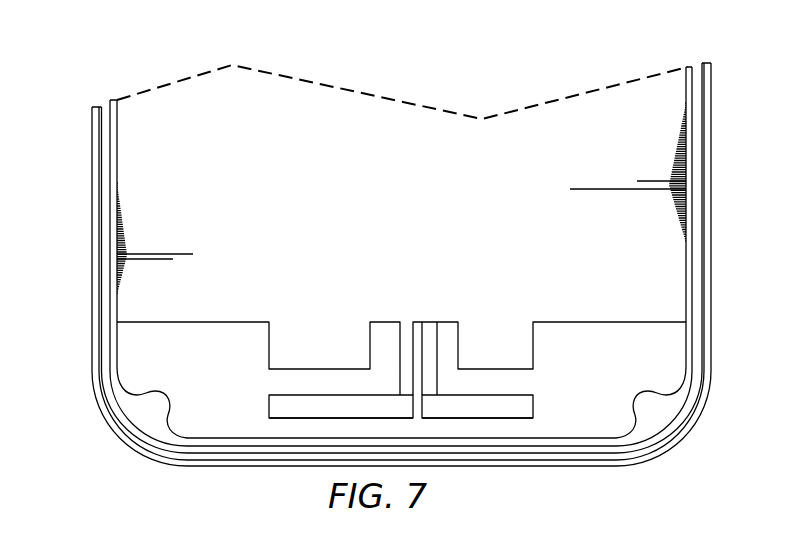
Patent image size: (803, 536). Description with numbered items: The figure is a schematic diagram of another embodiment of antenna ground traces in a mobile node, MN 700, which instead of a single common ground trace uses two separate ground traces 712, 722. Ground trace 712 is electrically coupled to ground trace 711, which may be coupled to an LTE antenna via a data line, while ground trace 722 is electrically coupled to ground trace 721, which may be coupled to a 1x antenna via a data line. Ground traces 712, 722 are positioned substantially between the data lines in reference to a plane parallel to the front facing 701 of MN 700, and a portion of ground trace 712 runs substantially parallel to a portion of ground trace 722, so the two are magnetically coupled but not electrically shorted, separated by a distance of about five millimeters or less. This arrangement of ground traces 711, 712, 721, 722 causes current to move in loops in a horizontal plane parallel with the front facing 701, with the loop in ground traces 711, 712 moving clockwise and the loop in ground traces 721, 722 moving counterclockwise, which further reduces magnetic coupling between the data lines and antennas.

The MN 700 is at (97, 76).
The front facing 701 is at (434, 201).
The ground trace 721 is at (269, 402).
The ground trace 711 is at (533, 402).
The ground trace 722 is at (331, 418).
The ground trace 712 is at (477, 418).